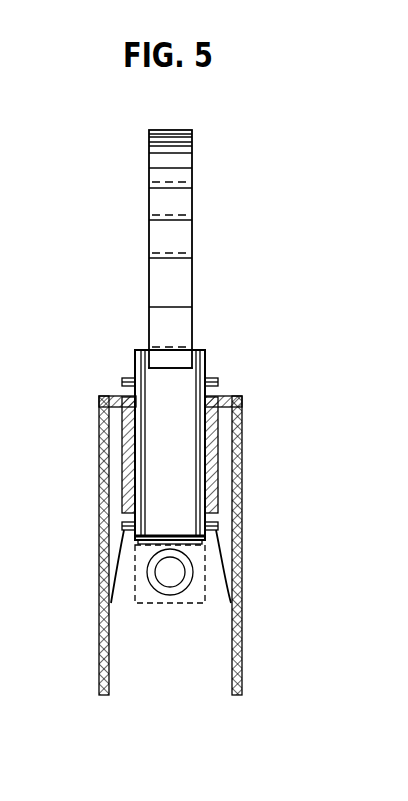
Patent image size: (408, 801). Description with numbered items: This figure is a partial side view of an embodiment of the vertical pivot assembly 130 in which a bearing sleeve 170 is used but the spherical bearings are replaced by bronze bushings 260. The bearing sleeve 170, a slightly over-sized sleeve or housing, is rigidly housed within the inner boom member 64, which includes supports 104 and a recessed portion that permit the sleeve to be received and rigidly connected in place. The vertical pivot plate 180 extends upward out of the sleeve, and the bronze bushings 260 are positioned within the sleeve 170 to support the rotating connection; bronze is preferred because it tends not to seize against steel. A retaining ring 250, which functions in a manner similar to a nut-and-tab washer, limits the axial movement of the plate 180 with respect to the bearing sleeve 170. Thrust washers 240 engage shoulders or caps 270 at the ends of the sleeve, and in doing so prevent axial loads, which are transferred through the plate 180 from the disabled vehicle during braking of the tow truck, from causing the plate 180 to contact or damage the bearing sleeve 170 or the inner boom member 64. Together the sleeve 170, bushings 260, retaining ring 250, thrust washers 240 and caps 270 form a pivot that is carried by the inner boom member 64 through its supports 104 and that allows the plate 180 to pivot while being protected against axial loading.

The inner boom member 64 is at (94, 603).
The vertical pivot assembly 130 is at (104, 188).
The vertical pivot plate 180 is at (183, 207).
The bearing sleeve 170 is at (162, 462).
The shoulders or caps 270 is at (131, 378).
The bronze bushings 260 is at (110, 402).
The supports 104 is at (222, 504).
The retaining ring 250 is at (173, 538).
The thrust washers 240 is at (113, 584).